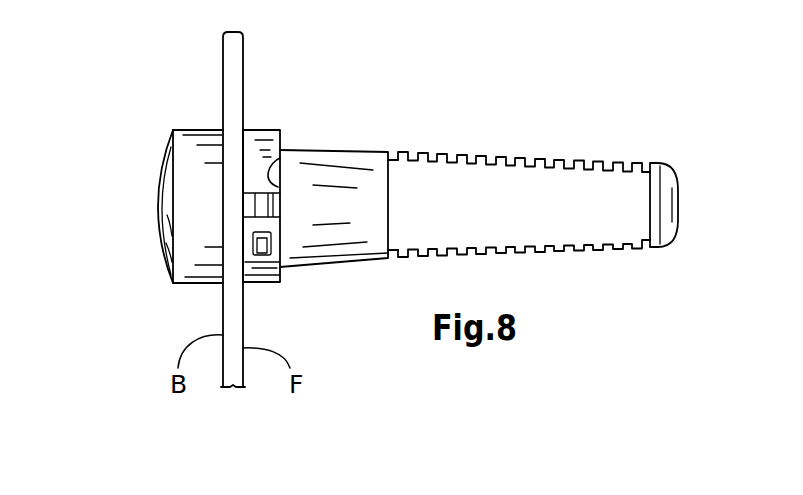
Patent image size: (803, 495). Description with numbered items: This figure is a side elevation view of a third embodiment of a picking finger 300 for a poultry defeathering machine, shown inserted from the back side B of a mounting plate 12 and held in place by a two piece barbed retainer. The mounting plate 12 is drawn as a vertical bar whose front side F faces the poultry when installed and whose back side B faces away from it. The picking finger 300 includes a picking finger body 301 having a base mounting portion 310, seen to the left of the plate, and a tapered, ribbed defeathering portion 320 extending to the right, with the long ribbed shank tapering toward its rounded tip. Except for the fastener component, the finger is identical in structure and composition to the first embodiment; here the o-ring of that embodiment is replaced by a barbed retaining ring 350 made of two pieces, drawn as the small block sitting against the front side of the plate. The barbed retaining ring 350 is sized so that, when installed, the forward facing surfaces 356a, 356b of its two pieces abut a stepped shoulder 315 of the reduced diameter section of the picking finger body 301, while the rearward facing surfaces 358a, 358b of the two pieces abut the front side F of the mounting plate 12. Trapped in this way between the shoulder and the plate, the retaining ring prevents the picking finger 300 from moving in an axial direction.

The mounting plate 12 is at (223, 60).
The picking finger 300 is at (472, 116).
The picking finger body 301 is at (500, 133).
The base mounting portion 310 is at (153, 199).
The stepped shoulder 315 is at (282, 157).
The tapered, ribbed defeathering portion 320 is at (545, 157).
The barbed retaining ring 350 is at (272, 120).
The forward facing surface 356a is at (282, 137).
The forward facing surface 356b is at (280, 270).
The rearward facing surface 358a is at (243, 158).
The rearward facing surface 358b is at (246, 252).